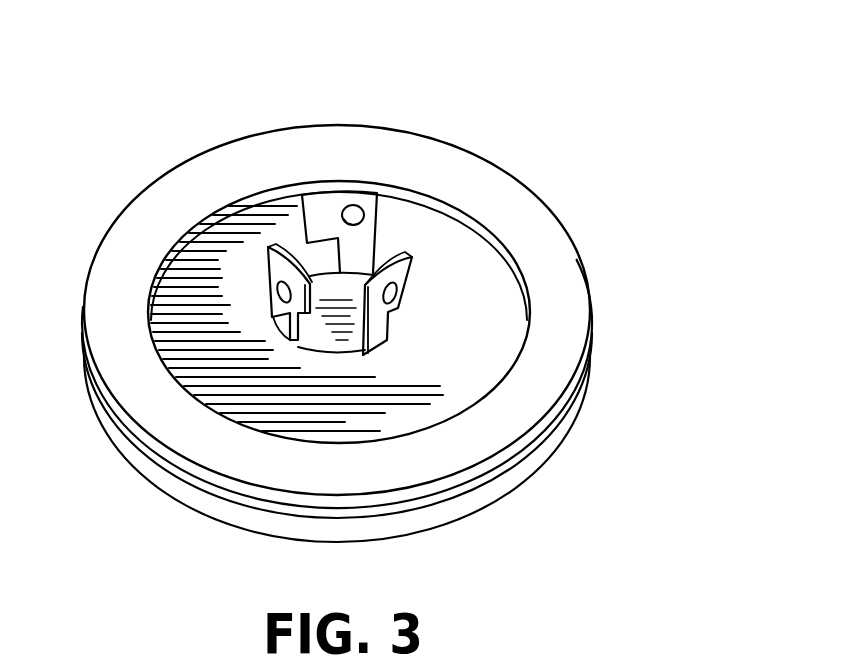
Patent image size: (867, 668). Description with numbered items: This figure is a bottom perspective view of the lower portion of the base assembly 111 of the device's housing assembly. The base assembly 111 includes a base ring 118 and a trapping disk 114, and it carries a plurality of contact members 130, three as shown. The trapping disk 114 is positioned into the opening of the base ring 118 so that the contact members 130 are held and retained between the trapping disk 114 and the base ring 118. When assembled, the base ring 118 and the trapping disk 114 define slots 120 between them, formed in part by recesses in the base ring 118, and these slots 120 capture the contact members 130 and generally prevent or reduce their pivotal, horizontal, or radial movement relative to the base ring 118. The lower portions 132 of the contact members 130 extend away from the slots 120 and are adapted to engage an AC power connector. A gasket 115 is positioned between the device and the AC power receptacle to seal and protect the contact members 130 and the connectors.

The base assembly 111 is at (610, 248).
The trapping disk 114 is at (328, 307).
The gasket 115 is at (440, 170).
The base ring 118 is at (457, 292).
The slots 120 is at (395, 335).
The contact members 130 is at (278, 315).
The lower portions 132 is at (320, 190).